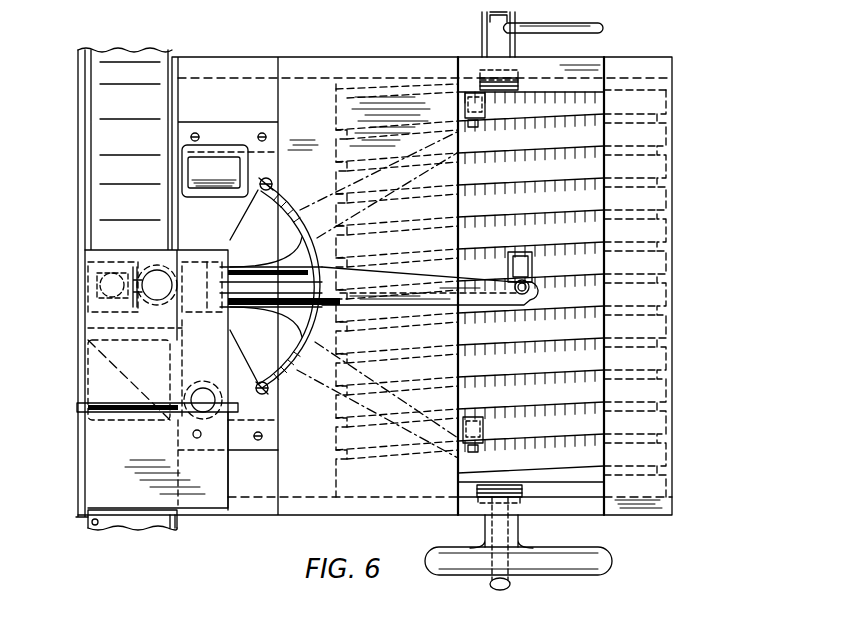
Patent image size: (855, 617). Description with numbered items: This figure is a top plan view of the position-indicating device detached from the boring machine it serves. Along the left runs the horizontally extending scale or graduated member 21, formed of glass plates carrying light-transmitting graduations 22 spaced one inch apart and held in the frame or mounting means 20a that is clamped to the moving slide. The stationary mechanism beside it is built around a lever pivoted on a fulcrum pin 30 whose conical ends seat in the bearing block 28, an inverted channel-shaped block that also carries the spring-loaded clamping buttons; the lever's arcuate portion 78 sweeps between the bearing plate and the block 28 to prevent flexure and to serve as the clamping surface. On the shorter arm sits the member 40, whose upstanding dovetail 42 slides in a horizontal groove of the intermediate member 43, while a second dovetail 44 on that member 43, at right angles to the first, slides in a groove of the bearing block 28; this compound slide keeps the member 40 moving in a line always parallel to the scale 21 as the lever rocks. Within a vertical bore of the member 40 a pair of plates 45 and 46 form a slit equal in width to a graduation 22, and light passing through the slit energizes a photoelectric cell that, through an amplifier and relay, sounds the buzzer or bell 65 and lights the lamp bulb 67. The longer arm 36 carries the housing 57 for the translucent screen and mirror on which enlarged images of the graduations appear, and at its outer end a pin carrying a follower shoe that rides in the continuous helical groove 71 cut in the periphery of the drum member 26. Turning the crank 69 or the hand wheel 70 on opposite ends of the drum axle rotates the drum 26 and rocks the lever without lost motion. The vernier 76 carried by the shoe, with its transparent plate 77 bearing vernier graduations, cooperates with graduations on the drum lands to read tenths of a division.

The scale or graduated member 21 is at (100, 178).
The lamp bulb 67 is at (206, 158).
The fulcrum pin 30 is at (204, 262).
The longer arm of the lever 36 is at (480, 297).
The transparent plate 77 is at (508, 268).
The vernier 76 is at (533, 270).
The arcuate portion 78 is at (283, 378).
The member 40 is at (100, 313).
The plate 46 is at (97, 276).
The plate 45 is at (103, 296).
The dovetail 44 is at (183, 353).
The dovetail 42 is at (88, 335).
The member 43 is at (88, 365).
The buzzer or bell 65 is at (214, 441).
The bearing block 28 is at (272, 444).
The housing 57 is at (128, 428).
The frame or mounting means 20a is at (80, 488).
The graduations 22 is at (142, 528).
The crank 69 is at (560, 30).
The helical groove 71 is at (590, 450).
The drum member 26 is at (590, 487).
The hand wheel 70 is at (597, 547).